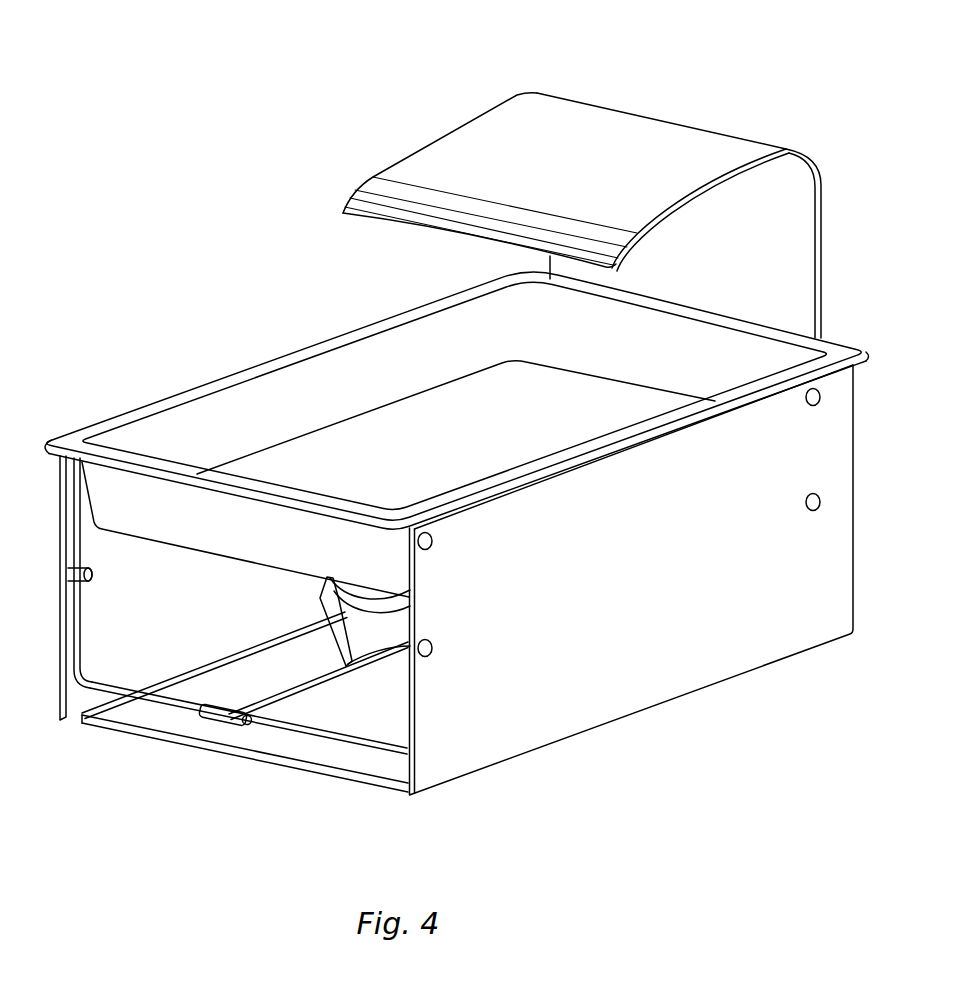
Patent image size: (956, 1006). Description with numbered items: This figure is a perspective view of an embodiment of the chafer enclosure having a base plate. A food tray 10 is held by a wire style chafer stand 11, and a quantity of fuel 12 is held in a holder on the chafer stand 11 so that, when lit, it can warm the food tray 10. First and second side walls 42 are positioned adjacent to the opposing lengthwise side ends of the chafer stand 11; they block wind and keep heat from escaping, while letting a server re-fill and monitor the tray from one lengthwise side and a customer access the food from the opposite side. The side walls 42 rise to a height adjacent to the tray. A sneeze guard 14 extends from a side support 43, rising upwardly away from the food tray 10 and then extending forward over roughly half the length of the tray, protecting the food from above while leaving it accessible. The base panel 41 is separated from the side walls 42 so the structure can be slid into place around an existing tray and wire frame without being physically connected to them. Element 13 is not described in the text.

The food tray 10 is at (184, 518).
The chafer stand 11 is at (347, 743).
The quantity of fuel 12 is at (331, 639).
The side post 13 is at (111, 650).
The sneeze guard 14 is at (555, 127).
The base panel 41 is at (203, 732).
The side walls 42 is at (40, 493).
The side support 43 is at (820, 193).